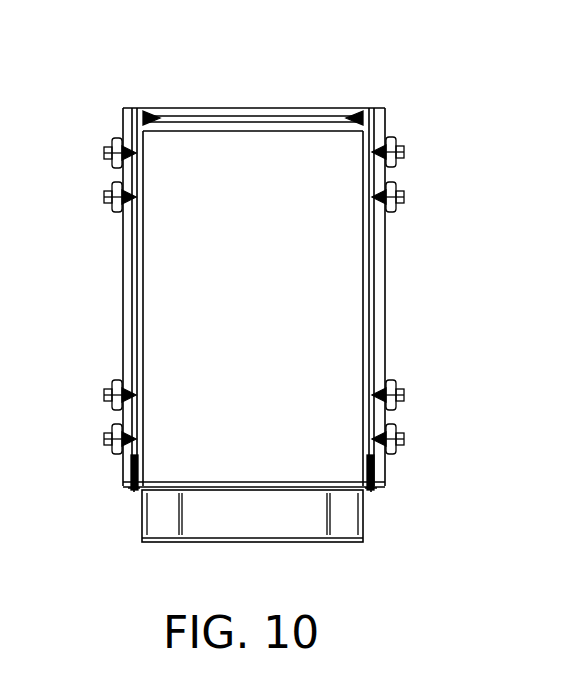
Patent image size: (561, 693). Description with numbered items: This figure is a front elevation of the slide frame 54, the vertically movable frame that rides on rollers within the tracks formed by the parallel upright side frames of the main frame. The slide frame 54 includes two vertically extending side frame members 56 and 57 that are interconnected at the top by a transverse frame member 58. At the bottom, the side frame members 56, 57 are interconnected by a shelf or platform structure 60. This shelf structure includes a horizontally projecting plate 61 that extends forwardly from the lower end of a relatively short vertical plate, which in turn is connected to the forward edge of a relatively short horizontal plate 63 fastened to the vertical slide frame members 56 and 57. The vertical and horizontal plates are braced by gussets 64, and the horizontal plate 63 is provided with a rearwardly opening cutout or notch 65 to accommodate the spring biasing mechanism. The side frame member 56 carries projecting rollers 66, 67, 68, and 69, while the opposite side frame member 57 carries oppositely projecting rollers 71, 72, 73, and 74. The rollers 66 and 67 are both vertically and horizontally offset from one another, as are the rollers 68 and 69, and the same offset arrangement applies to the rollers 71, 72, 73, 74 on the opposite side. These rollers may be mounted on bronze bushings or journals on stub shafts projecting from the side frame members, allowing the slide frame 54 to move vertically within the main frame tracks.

The slide frame 54 is at (267, 270).
The side frame member 56 is at (123, 310).
The side frame member 57 is at (385, 338).
The transverse frame member 58 is at (230, 110).
The shelf or platform structure 60 is at (308, 535).
The horizontally projecting plate 61 is at (268, 543).
The horizontal plate 63 is at (162, 482).
The gussets 64 is at (182, 507).
The cutout or notch 65 is at (253, 478).
The roller 66 is at (113, 142).
The roller 67 is at (112, 210).
The roller 68 is at (108, 408).
The roller 69 is at (112, 455).
The roller 71 is at (392, 140).
The roller 72 is at (395, 208).
The roller 73 is at (390, 380).
The roller 74 is at (397, 457).